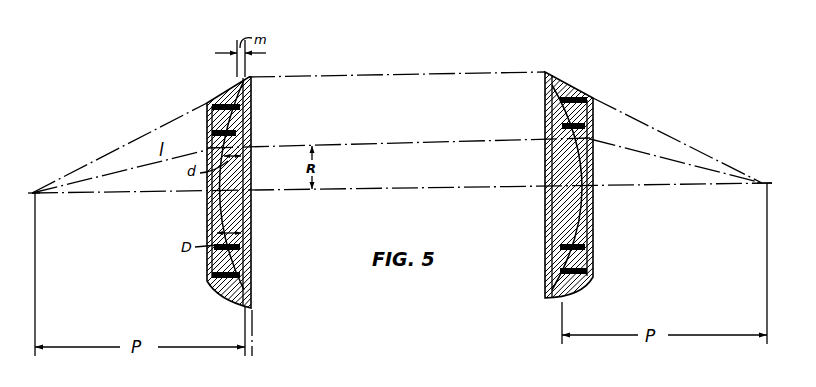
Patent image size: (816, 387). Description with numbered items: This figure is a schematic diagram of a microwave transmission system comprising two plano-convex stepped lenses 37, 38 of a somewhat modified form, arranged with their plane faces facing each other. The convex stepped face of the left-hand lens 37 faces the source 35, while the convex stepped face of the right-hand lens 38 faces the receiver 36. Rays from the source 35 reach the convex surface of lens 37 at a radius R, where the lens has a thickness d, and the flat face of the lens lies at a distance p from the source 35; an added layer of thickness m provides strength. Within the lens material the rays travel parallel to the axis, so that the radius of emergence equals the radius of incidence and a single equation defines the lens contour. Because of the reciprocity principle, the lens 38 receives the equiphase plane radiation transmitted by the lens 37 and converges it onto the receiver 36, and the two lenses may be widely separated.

The source 35 is at (32, 192).
The receiver 36 is at (763, 182).
The lens 37 is at (253, 248).
The lens 38 is at (544, 232).